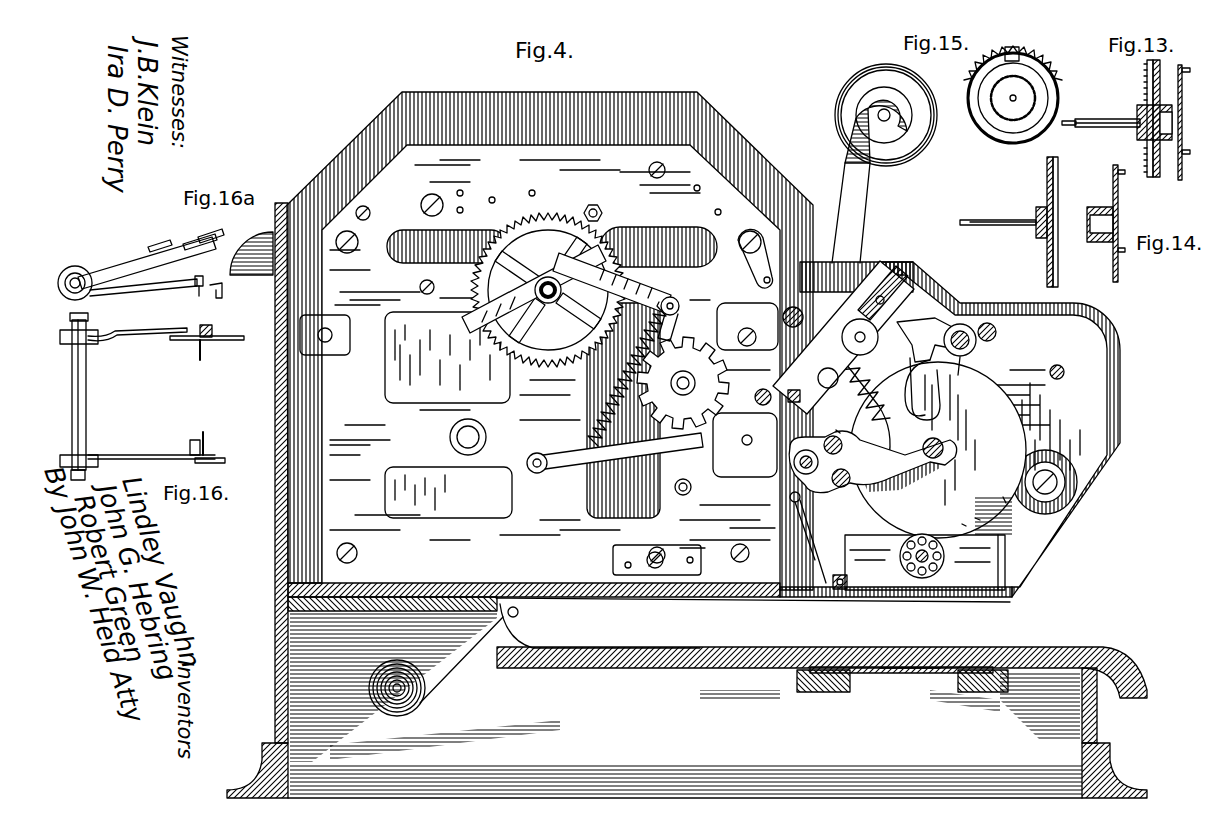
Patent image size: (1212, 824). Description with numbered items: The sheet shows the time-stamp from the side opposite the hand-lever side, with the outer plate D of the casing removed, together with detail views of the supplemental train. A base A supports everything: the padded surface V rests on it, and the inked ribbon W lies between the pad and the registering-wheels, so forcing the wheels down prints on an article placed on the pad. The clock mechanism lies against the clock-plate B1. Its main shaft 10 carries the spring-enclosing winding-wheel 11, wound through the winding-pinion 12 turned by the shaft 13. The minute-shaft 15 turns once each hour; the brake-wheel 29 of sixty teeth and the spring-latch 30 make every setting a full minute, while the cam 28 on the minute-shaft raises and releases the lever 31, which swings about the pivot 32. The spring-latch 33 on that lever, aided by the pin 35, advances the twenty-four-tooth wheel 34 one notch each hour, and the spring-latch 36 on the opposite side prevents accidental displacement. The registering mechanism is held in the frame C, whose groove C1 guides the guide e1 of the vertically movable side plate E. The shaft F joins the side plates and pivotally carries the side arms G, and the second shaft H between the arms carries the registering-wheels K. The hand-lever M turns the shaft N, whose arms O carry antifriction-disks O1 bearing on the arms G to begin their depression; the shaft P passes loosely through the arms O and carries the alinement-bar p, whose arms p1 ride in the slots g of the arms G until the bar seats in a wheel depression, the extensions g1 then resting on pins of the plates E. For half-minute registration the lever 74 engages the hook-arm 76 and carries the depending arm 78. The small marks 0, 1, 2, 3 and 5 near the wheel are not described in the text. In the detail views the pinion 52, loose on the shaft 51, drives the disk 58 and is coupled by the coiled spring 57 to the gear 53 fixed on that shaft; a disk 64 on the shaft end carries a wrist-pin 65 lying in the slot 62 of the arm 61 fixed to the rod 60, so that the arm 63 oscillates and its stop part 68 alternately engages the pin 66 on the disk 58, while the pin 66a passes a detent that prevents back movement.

In FIG. 4, the outer plate D is at (737, 150).
In FIG. 4, the winding-pinion 12 is at (275, 345).
In FIG. 4, the base A is at (700, 650).
In FIG. 4, the padded surface V is at (900, 650).
In FIG. 4, the inked ribbon W is at (570, 602).
In FIG. 4, the clock-plate B1 is at (600, 190).
In FIG. 4, the winding-wheel 11 is at (422, 390).
In FIG. 4, the main shaft 10 is at (465, 445).
In FIG. 4, the winding shaft 13 is at (330, 343).
In FIG. 4, the minute-shaft 15 is at (612, 200).
In FIG. 4, the brake-wheel 29 is at (545, 255).
In FIG. 4, the spring-latch 30 is at (505, 345).
In FIG. 4, the cam 28 is at (545, 286).
In FIG. 4, the wheel 34 is at (683, 383).
In FIG. 4, the lever 31 is at (566, 289).
In FIG. 4, the spring-latch 33 is at (680, 303).
In FIG. 4, the pin 35 is at (690, 315).
In FIG. 4, the spring-latch 36 is at (568, 470).
In FIG. 4, the pivot 32 is at (764, 388).
In FIG. 4, the arm O is at (830, 270).
In FIG. 4, the side plate E is at (1000, 429).
In FIG. 4, the frame C is at (1108, 430).
In FIG. 4, the registering-wheel K is at (1032, 420).
In FIG. 4, the side arm G is at (932, 448).
In FIG. 4, the hand-lever M is at (870, 190).
In FIG. 4, the shaft P is at (905, 292).
In FIG. 4, the groove C1 is at (875, 262).
In FIG. 4, the guide e1 is at (882, 293).
In FIG. 4, the antifriction-disk O1 is at (880, 330).
In FIG. 4, the slot g is at (900, 330).
In FIG. 4, the alinement-bar p is at (962, 325).
In FIG. 4, the extending arm p1 is at (992, 322).
In FIG. 4, the extension g1 is at (966, 356).
In FIG. 4, the rotatable shaft N is at (794, 406).
In FIG. 4, the shaft F is at (818, 462).
In FIG. 4, the second shaft H is at (944, 450).
In FIG. 4, the hook-arm 76 is at (803, 520).
In FIG. 4, the lever 74 is at (824, 541).
In FIG. 4, the depending arm 78 is at (833, 578).
In FIG. 4, the rosette wheel 5 is at (925, 562).
In FIG. 4, the scale mark 0 is at (1007, 495).
In FIG. 4, the scale mark 1 is at (837, 426).
In FIG. 4, the scale mark 2 is at (911, 479).
In FIG. 4, the scale mark 3 is at (962, 522).
In FIG. 16A, the arm 61 is at (120, 258).
In FIG. 16, the arm 61 is at (130, 455).
In FIG. 16A, the stop-arm 63 is at (160, 283).
In FIG. 16, the stop-arm 63 is at (145, 328).
In FIG. 16A, the slot 62 is at (160, 244).
In FIG. 16A, the wrist-pin 65 is at (200, 242).
In FIG. 16, the wrist-pin 65 is at (220, 460).
In FIG. 16A, the disk 64 is at (222, 241).
In FIG. 16, the disk 64 is at (190, 446).
In FIG. 16A, the stop part 68 is at (196, 284).
In FIG. 16, the rod 60 is at (88, 380).
In FIG. 16, the disk 58 is at (207, 348).
In FIG. 13, the disk 58 is at (1183, 95).
In FIG. 14, the disk 58 is at (1118, 194).
In FIG. 16, the pin 66 is at (212, 328).
In FIG. 13, the pin 66 is at (1188, 66).
In FIG. 14, the pin 66 is at (1123, 169).
In FIG. 16, the shaft 51 is at (198, 350).
In FIG. 15, the shaft 51 is at (1011, 102).
In FIG. 13, the shaft 51 is at (1108, 127).
In FIG. 14, the shaft 51 is at (1005, 218).
In FIG. 15, the coiled spring 57 is at (1048, 82).
In FIG. 15, the gear 53 is at (1050, 54).
In FIG. 13, the gear 53 is at (1147, 90).
In FIG. 14, the gear 53 is at (1058, 166).
In FIG. 13, the pinion 52 is at (1160, 142).
In FIG. 14, the pinion 52 is at (1095, 207).
In FIG. 13, the pin 66a is at (1190, 154).
In FIG. 14, the pin 66a is at (1125, 252).